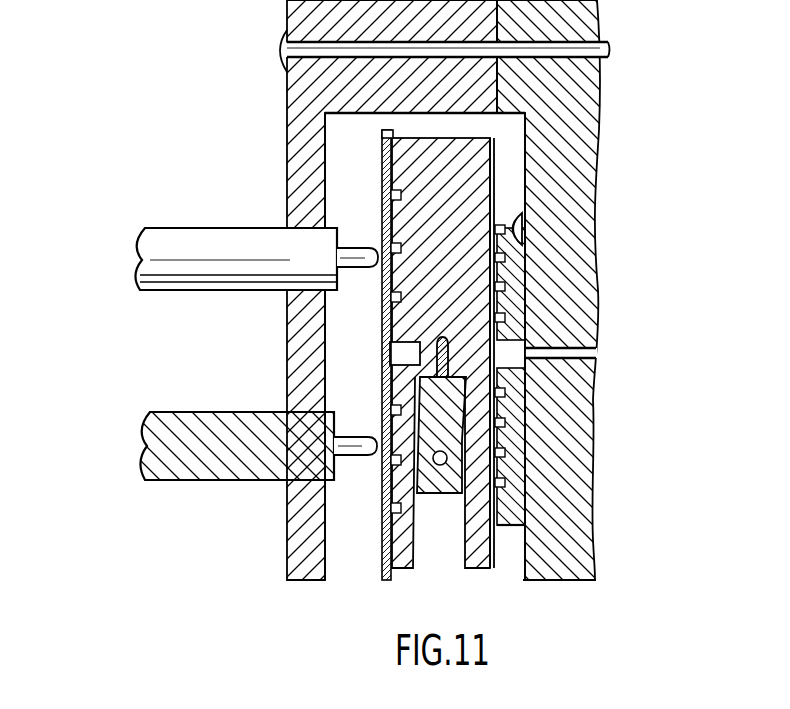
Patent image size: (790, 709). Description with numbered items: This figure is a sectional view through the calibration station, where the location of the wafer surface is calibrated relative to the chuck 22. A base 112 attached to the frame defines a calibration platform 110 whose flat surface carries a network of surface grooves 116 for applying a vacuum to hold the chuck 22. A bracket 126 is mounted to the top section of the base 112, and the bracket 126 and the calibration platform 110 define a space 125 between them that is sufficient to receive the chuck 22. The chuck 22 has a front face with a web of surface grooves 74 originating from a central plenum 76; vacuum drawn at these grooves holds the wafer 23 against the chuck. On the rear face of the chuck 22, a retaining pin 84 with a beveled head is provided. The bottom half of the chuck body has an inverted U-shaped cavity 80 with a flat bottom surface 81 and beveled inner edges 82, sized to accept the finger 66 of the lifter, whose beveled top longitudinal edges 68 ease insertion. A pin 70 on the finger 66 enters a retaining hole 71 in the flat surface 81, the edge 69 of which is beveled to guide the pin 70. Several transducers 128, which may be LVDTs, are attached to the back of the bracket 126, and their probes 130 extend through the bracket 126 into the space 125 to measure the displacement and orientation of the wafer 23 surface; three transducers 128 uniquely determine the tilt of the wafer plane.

The chuck 22 is at (468, 272).
The wafer 23 is at (372, 208).
The finger 66 is at (441, 495).
The beveled top longitudinal edges 68 is at (497, 405).
The edge of the retaining hole 69 is at (467, 402).
The pin 70 is at (443, 352).
The retaining hole 71 is at (452, 336).
The surface grooves 74 is at (395, 195).
The plenum 76 is at (403, 352).
The U-shaped cavity 80 is at (460, 568).
The bottom surface 81 is at (432, 371).
The inner edges 82 is at (412, 555).
The retaining pin 84 is at (520, 205).
The calibration platform 110 is at (537, 517).
The base 112 is at (573, 95).
The surface grooves 116 is at (508, 513).
The space 125 is at (340, 130).
The bracket 126 is at (315, 165).
The transducers 128 is at (182, 277).
The probe 130 is at (363, 262).